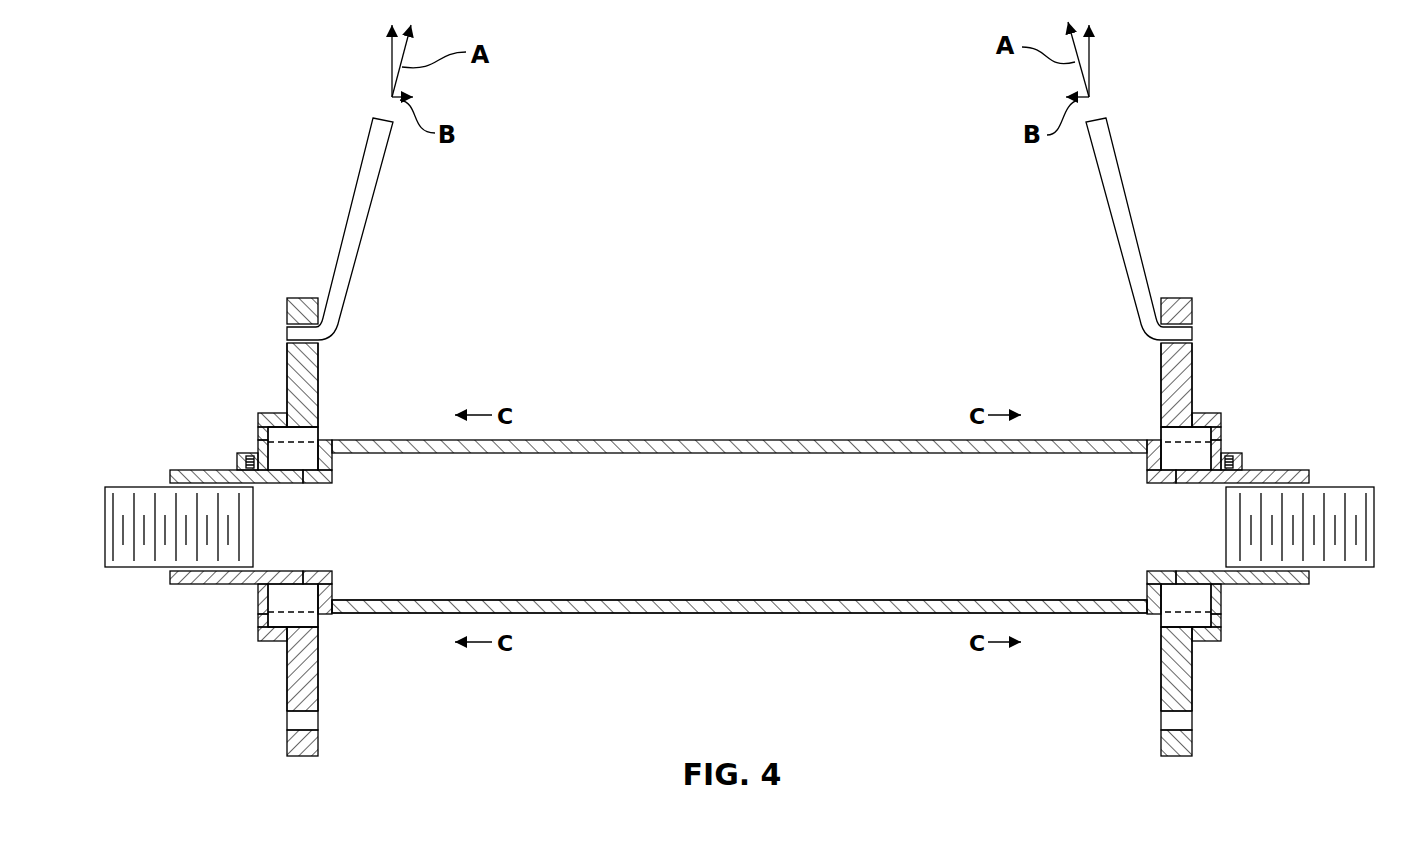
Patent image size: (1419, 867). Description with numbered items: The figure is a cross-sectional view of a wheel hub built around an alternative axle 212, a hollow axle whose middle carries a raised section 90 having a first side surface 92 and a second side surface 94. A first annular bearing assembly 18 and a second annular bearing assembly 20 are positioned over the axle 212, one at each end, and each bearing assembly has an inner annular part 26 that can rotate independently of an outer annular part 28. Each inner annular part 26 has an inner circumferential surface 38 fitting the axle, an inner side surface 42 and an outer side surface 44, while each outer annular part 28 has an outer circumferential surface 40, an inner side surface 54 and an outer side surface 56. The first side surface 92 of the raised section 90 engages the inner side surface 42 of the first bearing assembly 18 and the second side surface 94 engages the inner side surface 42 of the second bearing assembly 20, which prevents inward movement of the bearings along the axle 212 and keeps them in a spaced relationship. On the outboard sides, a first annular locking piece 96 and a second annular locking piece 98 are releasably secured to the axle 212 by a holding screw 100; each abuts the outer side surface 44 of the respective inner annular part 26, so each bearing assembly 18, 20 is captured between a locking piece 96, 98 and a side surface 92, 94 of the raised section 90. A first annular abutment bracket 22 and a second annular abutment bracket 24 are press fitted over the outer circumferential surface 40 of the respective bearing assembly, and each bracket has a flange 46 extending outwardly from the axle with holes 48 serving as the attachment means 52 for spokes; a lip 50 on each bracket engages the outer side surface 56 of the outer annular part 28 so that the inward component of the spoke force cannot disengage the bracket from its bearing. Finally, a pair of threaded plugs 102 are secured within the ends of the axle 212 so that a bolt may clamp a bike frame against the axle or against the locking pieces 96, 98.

The first annular bearing assembly 18 is at (300, 455).
The second annular bearing assembly 20 is at (1179, 455).
The first annular abutment bracket 22 is at (285, 345).
The second annular abutment bracket 24 is at (1194, 345).
The inner annular part 26 is at (282, 458).
The outer annular part 28 is at (318, 420).
The inner circumferential surface 38 is at (293, 483).
The outer circumferential surface 40 is at (283, 408).
The inner side surface 42 is at (313, 427).
The outer side surface 44 is at (260, 450).
The flange 46 is at (310, 353).
The holes 48 is at (290, 727).
The lip 50 is at (257, 440).
The attachment means 52 is at (370, 160).
The inner side surface 54 is at (303, 433).
The outer side surface 56 is at (270, 411).
The raised section 90 is at (570, 445).
The first side surface 92 is at (303, 477).
The second side surface 94 is at (1176, 477).
The first annular locking piece 96 is at (240, 462).
The second annular locking piece 98 is at (1239, 462).
The holding screw 100 is at (250, 458).
The threaded plugs 102 is at (147, 552).
The axle 212 is at (645, 525).